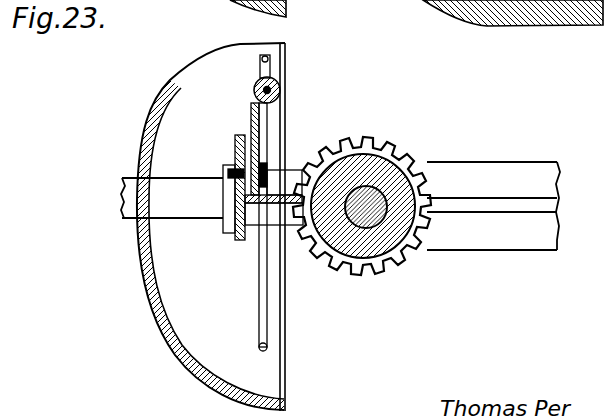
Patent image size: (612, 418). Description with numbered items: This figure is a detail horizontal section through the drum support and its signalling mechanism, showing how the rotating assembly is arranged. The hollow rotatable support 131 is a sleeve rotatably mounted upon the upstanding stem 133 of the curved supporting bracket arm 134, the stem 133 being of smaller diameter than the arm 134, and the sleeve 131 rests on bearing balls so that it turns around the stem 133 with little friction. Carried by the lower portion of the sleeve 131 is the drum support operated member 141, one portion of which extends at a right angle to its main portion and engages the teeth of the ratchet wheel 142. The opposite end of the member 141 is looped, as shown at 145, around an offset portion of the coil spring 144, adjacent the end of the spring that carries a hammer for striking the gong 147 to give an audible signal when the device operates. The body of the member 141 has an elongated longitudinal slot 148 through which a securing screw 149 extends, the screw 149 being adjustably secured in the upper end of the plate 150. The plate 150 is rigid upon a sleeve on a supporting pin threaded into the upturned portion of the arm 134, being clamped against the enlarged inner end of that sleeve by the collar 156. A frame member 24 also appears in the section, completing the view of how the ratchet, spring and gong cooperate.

The frame member 24 is at (233, 13).
The hollow rotatable support 131 is at (431, 228).
The upstanding stem 133 is at (388, 163).
The curved supporting bracket arm 134 is at (500, 153).
The drum support operated member 141 is at (267, 193).
The ratchet wheel 142 is at (388, 272).
The coil spring 144 is at (258, 290).
The loop 145 is at (281, 89).
The gong 147 is at (137, 246).
The elongated longitudinal slot 148 is at (236, 153).
The securing screw 149 is at (232, 171).
The plate 150 is at (238, 240).
The collar 156 is at (243, 133).